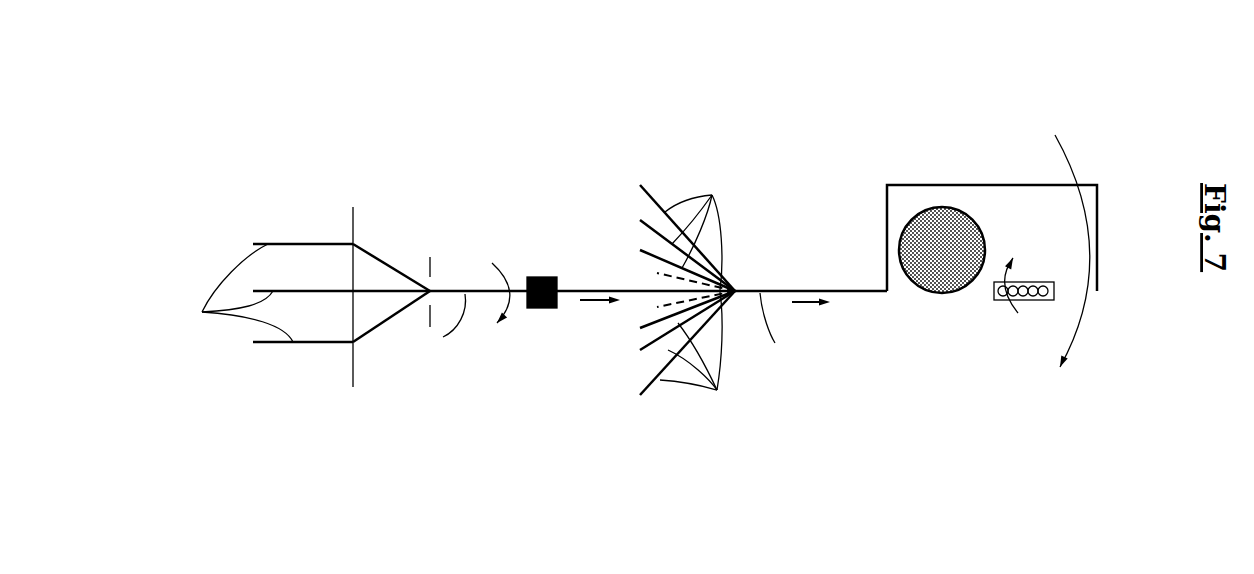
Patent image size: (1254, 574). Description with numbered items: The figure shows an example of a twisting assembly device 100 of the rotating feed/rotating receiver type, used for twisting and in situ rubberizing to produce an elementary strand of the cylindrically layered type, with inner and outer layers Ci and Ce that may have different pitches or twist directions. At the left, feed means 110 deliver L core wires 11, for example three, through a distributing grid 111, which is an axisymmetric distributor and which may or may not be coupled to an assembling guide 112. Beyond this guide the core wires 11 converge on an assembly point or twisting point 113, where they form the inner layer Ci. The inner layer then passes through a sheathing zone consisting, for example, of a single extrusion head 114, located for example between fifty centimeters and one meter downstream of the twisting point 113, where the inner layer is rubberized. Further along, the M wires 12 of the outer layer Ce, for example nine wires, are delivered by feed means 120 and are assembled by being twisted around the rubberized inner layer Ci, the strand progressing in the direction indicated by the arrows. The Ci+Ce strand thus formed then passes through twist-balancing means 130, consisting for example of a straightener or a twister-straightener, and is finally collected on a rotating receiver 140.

The twisting assembly device 100 is at (804, 104).
The feed means 110 is at (213, 239).
The core wires 11 is at (240, 297).
The distributing grid 111 is at (353, 210).
The assembling guide 112 is at (426, 307).
The twisting point 113 is at (444, 276).
The extrusion head 114 is at (540, 308).
The feed means 120 is at (672, 176).
The wires of the outer layer 12 is at (706, 297).
The twist-balancing means 130 is at (1030, 280).
The rotating receiver 140 is at (957, 326).